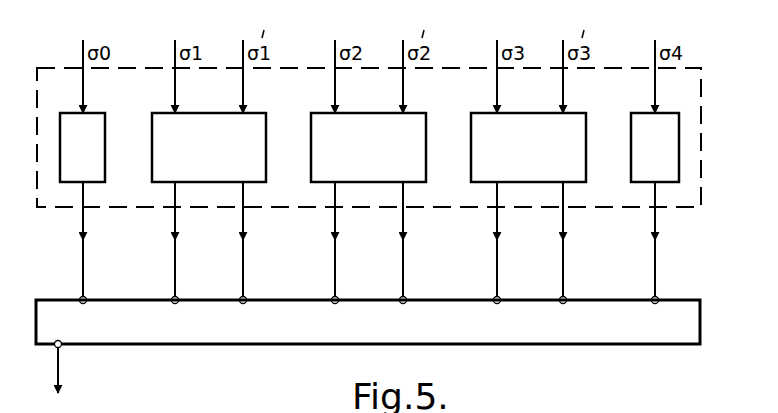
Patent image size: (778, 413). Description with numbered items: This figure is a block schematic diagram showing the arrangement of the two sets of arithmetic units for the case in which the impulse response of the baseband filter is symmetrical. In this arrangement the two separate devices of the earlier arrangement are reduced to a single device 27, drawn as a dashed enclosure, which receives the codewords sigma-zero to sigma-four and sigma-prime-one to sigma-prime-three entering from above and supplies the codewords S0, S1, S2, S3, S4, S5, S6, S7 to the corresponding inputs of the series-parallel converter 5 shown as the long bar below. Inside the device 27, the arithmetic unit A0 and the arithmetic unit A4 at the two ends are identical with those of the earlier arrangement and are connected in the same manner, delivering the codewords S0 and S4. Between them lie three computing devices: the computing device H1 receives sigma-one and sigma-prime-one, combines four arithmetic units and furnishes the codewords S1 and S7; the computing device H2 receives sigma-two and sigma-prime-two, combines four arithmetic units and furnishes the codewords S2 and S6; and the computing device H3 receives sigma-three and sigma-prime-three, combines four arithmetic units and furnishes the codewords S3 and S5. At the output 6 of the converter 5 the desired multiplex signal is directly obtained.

The device 27 is at (50, 190).
The series-parallel converter 5 is at (300, 344).
The output 6 is at (62, 348).
The arithmetic unit A0 is at (70, 118).
The computing device H1 is at (163, 122).
The computing device H2 is at (322, 122).
The computing device H3 is at (482, 122).
The arithmetic unit A4 is at (638, 125).
The codeword S0 is at (99, 243).
The codeword S1 is at (191, 243).
The codeword S2 is at (351, 243).
The codeword S3 is at (513, 243).
The codeword S4 is at (671, 243).
The codeword S5 is at (579, 243).
The codeword S6 is at (419, 243).
The codeword S7 is at (259, 243).